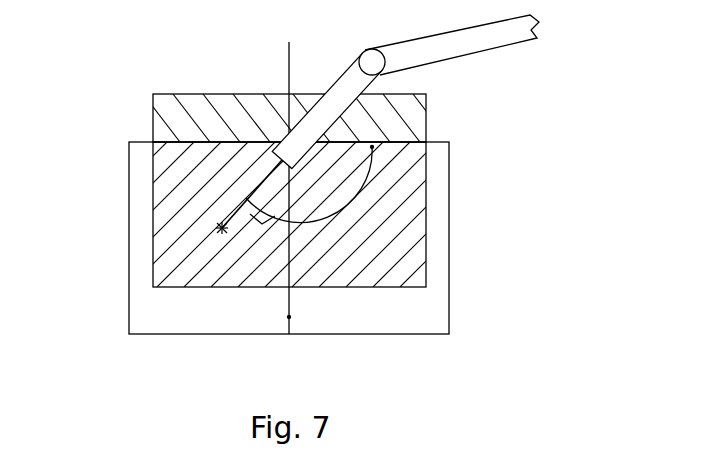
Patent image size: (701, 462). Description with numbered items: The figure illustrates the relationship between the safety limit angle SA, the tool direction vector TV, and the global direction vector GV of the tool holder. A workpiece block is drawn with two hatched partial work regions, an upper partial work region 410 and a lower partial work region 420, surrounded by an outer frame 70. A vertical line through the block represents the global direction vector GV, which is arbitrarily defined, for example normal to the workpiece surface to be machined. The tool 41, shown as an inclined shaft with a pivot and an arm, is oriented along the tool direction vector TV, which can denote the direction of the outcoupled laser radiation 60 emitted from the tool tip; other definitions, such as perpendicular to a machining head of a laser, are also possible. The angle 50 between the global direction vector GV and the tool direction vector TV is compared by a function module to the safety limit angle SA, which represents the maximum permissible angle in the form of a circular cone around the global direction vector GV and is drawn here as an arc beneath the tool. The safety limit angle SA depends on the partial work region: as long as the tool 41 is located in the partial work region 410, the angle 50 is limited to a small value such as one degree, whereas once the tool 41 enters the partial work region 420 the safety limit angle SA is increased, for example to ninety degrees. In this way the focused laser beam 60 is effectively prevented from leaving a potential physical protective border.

The holder / fixture 70 is at (452, 198).
The partial work region 410 is at (178, 123).
The partial work region 420 is at (187, 187).
The tool 41 is at (281, 156).
The outcoupled laser radiation 60 is at (218, 229).
The angle 50 is at (261, 222).
The safety limit angle SA is at (325, 222).
The global direction vector GV is at (290, 50).
The tool direction vector TV is at (255, 195).